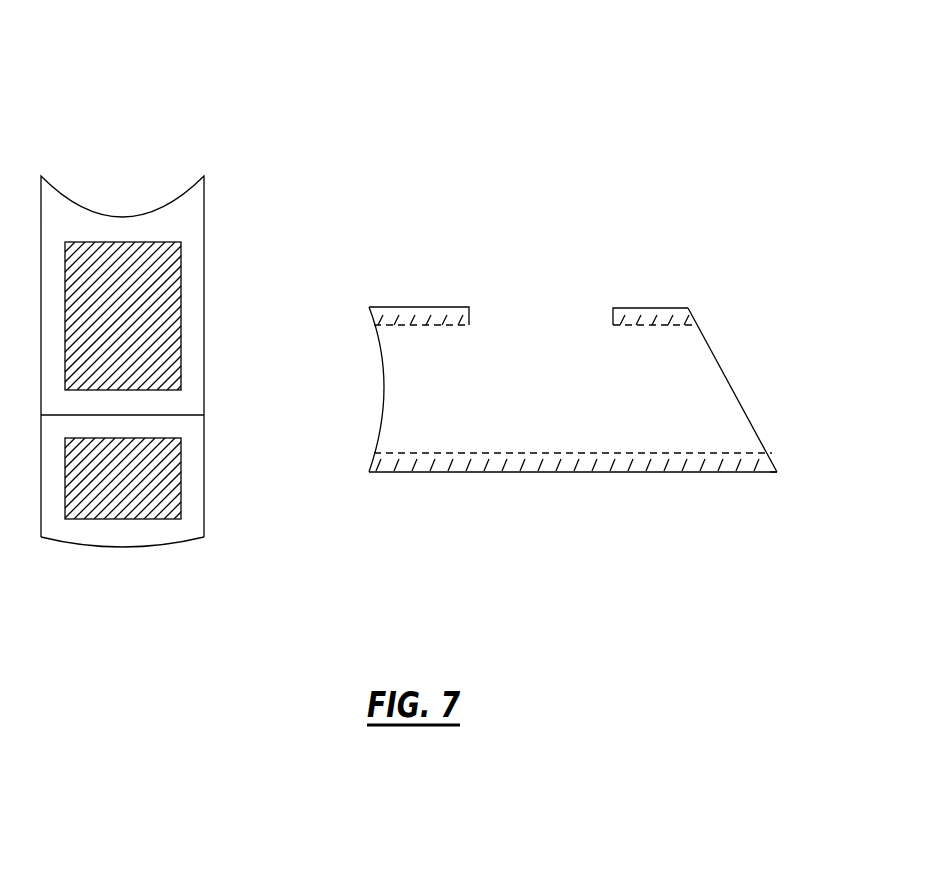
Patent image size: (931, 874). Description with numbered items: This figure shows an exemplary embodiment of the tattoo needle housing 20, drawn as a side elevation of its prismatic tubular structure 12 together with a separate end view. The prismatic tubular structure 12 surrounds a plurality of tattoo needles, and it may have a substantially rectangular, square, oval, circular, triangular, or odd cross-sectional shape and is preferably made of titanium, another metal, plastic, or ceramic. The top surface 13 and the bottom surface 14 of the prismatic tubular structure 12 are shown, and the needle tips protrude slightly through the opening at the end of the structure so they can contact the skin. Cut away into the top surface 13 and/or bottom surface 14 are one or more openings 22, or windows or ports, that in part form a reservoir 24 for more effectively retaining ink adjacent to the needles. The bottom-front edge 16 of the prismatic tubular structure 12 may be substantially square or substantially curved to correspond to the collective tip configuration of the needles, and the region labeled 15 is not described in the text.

The prismatic tubular structure 12 is at (204, 305).
The top surface 13 is at (418, 305).
The bottom surface 14 is at (111, 529).
The base strip 15 is at (414, 475).
The bottom-front edge 16 is at (184, 545).
The tattoo needle housing 20 is at (468, 118).
The openings 22 is at (186, 265).
The reservoir 24 is at (430, 386).